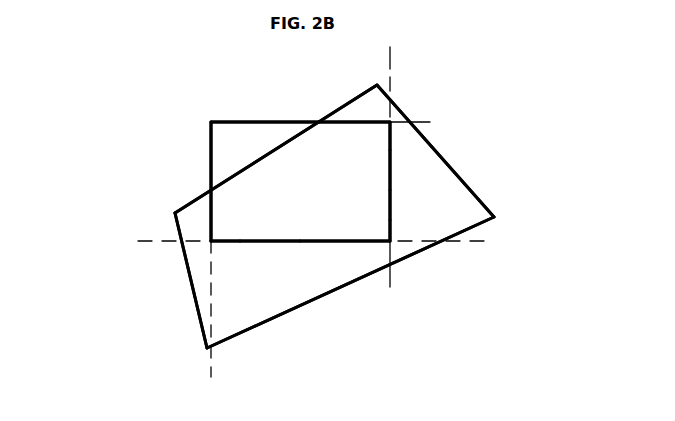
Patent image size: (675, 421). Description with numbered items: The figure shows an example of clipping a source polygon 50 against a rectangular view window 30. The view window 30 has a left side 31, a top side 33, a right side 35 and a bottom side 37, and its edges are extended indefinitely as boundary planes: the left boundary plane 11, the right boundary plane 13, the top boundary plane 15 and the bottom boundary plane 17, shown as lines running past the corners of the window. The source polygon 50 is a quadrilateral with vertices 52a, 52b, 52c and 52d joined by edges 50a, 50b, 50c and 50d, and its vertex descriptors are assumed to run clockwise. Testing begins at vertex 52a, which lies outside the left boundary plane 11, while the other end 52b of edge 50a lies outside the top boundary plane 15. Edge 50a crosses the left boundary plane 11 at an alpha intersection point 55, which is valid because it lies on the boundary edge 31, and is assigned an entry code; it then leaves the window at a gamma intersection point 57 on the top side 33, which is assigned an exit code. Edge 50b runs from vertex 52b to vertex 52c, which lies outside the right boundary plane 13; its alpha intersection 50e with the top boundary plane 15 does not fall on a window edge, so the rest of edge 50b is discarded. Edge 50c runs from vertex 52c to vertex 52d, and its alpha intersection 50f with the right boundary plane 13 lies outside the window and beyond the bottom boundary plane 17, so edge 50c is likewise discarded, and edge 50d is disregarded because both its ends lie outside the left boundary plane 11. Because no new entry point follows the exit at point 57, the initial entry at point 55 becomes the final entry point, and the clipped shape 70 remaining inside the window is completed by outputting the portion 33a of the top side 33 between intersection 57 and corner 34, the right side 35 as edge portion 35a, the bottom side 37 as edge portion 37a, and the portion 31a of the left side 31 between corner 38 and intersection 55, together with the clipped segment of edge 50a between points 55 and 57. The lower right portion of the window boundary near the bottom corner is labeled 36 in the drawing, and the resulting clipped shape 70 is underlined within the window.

The left boundary plane 11 is at (216, 368).
The right boundary plane 13 is at (391, 62).
The top boundary plane 15 is at (432, 120).
The bottom boundary plane 17 is at (142, 241).
The view window 30 is at (248, 150).
The left side 31 is at (209, 136).
The portion of boundary edge 31 31a is at (215, 219).
The top side 33 is at (218, 120).
The portion of boundary edge 33 33a is at (348, 127).
The corner 34 is at (386, 127).
The right side 35 is at (393, 208).
The edge portion 35a is at (392, 161).
The right edge lower portion 36 is at (393, 237).
The bottom side 37 is at (243, 247).
The edge portion 37a is at (319, 245).
The corner 38 is at (216, 246).
The source polygon 50 is at (459, 212).
The edge 50a is at (343, 104).
The edge 50b is at (450, 160).
The edge 50c is at (414, 254).
The edge 50d is at (178, 265).
The alpha intersection 50e is at (412, 120).
The alpha intersection 50f is at (393, 267).
The vertex 52a is at (175, 209).
The vertex 52b is at (375, 82).
The vertex 52c is at (495, 216).
The vertex 52d is at (202, 347).
The alpha intersection point 55 is at (214, 191).
The gamma intersection point 57 is at (318, 119).
The clipped figure 70 is at (366, 223).